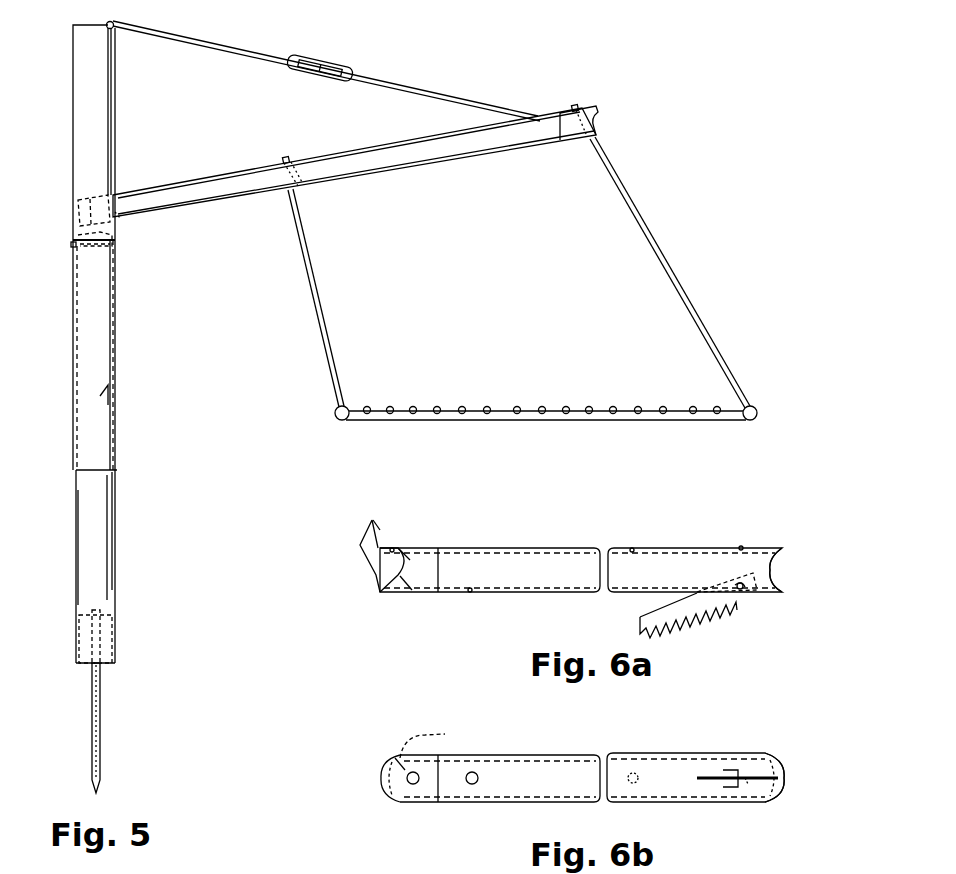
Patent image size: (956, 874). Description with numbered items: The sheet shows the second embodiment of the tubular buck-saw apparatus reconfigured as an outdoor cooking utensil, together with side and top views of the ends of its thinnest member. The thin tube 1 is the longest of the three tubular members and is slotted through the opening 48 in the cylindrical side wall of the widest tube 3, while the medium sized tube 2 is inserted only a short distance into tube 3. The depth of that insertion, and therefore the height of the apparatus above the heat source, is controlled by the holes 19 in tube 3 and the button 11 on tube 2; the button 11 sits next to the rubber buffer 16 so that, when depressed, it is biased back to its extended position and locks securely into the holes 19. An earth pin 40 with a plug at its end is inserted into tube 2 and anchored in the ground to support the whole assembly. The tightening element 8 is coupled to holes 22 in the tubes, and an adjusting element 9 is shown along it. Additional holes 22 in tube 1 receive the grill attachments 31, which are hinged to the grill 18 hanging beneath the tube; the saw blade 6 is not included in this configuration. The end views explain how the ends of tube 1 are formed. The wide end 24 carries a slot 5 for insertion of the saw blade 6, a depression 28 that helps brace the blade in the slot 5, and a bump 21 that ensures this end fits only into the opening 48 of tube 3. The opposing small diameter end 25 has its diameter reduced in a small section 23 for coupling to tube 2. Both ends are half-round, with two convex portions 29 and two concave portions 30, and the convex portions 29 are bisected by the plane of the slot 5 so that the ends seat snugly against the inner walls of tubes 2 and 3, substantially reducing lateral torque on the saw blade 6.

In FIG. 5, the thin tube 1 is at (216, 170).
In FIG. 6A, the thin tube 1 is at (503, 546).
In FIG. 6B, the thin tube 1 is at (522, 750).
In FIG. 5, the medium sized tube 2 is at (116, 545).
In FIG. 5, the widest tube 3 is at (118, 115).
In FIG. 6A, the slot 5 is at (760, 588).
In FIG. 6B, the slot 5 is at (782, 768).
In FIG. 6A, the saw blade 6 is at (712, 620).
In FIG. 5, the tightening element 8 is at (424, 74).
In FIG. 5, the turnbuckle 9 is at (355, 74).
In FIG. 5, the button 11 is at (72, 242).
In FIG. 5, the rubber buffer 16 is at (112, 246).
In FIG. 5, the grill 18 is at (491, 406).
In FIG. 5, the holes 19 is at (75, 438).
In FIG. 6A, the bump 21 is at (744, 547).
In FIG. 6B, the bump 21 is at (745, 784).
In FIG. 5, the holes 22 is at (296, 158).
In FIG. 6A, the holes 22 is at (392, 548).
In FIG. 6B, the holes 22 is at (472, 772).
In FIG. 6A, the small section of reduced diameter 23 is at (410, 578).
In FIG. 6A, the wide end 24 is at (792, 573).
In FIG. 6B, the wide end 24 is at (790, 779).
In FIG. 5, the small diameter end 25 is at (600, 120).
In FIG. 6A, the small diameter end 25 is at (362, 570).
In FIG. 6B, the small diameter end 25 is at (372, 778).
In FIG. 6A, the depression 28 is at (742, 596).
In FIG. 6B, the depression 28 is at (730, 768).
In FIG. 6A, the convex portions 29 is at (378, 548).
In FIG. 6B, the convex portions 29 is at (382, 786).
In FIG. 6A, the concave portions 30 is at (405, 553).
In FIG. 5, the grill attachments 31 is at (334, 300).
In FIG. 5, the earth pin 40 is at (101, 722).
In FIG. 5, the opening 48 is at (122, 192).